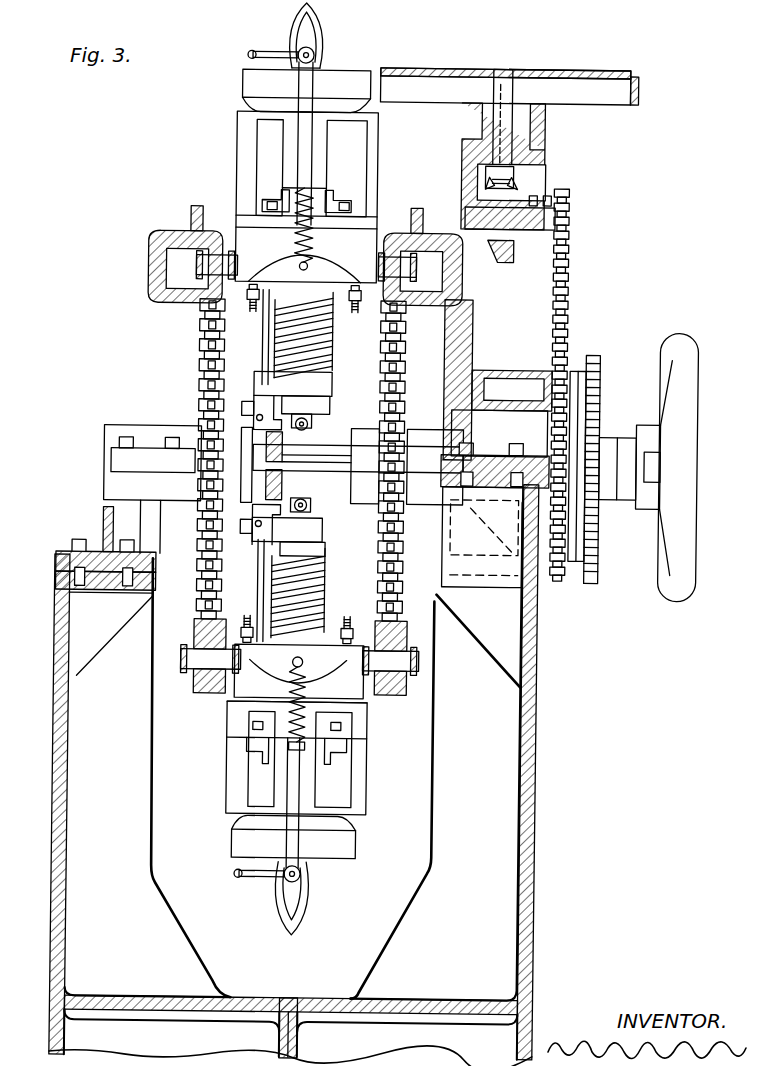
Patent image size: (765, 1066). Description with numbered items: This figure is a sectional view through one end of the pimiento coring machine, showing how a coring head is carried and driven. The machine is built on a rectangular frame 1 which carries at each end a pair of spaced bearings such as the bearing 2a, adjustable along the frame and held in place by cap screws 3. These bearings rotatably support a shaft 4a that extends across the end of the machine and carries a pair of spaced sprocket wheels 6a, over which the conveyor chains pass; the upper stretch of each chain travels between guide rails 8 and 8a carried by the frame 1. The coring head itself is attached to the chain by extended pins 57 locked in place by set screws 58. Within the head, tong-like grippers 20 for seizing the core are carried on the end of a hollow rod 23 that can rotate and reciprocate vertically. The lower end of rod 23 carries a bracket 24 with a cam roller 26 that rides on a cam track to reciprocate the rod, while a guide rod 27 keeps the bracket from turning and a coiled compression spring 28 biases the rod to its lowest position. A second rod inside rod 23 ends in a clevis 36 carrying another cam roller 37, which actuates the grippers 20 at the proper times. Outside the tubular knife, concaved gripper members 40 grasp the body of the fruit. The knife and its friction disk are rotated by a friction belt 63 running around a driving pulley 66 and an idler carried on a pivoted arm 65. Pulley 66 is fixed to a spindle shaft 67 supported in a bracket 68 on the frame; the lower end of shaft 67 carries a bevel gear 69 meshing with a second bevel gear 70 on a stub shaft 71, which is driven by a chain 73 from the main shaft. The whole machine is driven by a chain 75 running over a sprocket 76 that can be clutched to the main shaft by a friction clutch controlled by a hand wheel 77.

The rectangular frame 1 is at (539, 675).
The bearing 2a is at (106, 490).
The cap screw 3 is at (110, 540).
The shaft 4a is at (352, 466).
The sprocket wheel 6a is at (197, 372).
The guide rail 8 is at (148, 292).
The guide rail 8a is at (190, 220).
The tong like grippers 20 is at (316, 469).
The hollow rod 23 is at (325, 366).
The bracket 24 is at (330, 394).
The cam roller 26 is at (250, 402).
The guide rod 27 is at (260, 330).
The coiled compression spring 28 is at (325, 332).
The clevis 36 is at (312, 424).
The cam roller 37 is at (298, 463).
The concaved gripper members 40 is at (322, 32).
The pin 57 is at (208, 252).
The set screw 58 is at (297, 464).
The friction belt 63 is at (640, 90).
The arm 65 is at (466, 116).
The driving pulley 66 is at (592, 72).
The spindle shaft 67 is at (512, 130).
The bracket 68 is at (546, 152).
The bevel gear 69 is at (512, 176).
The bevel gear 70 is at (504, 262).
The stub shaft 71 is at (556, 218).
The chain 73 is at (568, 276).
The chain 75 is at (602, 362).
The sprocket 76 is at (590, 552).
The hand wheel 77 is at (700, 486).